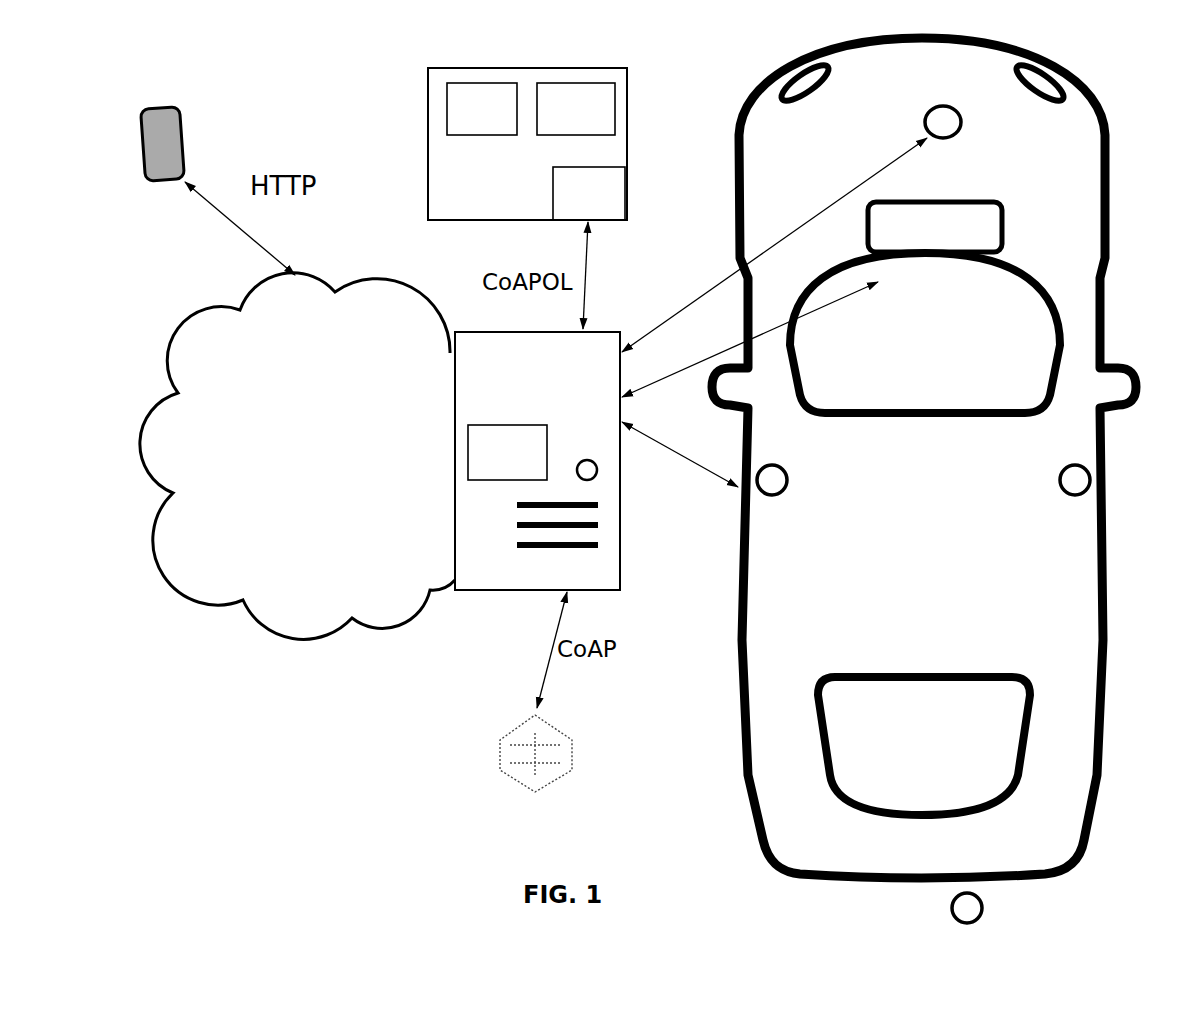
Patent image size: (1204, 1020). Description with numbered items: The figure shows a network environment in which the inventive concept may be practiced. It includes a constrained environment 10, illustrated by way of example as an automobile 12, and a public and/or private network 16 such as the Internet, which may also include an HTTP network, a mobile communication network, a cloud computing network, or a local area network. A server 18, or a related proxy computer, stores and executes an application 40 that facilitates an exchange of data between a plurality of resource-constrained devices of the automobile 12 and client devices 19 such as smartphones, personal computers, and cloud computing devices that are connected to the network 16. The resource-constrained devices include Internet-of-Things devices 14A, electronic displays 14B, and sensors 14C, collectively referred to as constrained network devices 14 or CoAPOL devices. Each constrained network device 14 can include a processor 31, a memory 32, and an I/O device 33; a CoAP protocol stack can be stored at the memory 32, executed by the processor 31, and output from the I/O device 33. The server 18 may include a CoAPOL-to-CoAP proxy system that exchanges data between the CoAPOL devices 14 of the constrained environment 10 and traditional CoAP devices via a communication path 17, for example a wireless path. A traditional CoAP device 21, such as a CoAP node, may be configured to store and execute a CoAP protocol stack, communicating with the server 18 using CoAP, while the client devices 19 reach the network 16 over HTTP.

The constrained environment 10 is at (955, 480).
The automobile 12 is at (1113, 263).
The constrained network device 14 is at (565, 111).
The Internet-of-Things device 14A is at (967, 125).
The electronic display 14B is at (958, 249).
The sensor 14C is at (795, 483).
The network 16 is at (379, 462).
The communication path 17 is at (732, 273).
The server 18 is at (537, 461).
The client device 19 is at (188, 134).
The traditional CoAP device 21 is at (508, 785).
The processor 31 is at (497, 123).
The memory 32 is at (591, 123).
The I/O device 33 is at (604, 210).
The application 40 is at (514, 470).